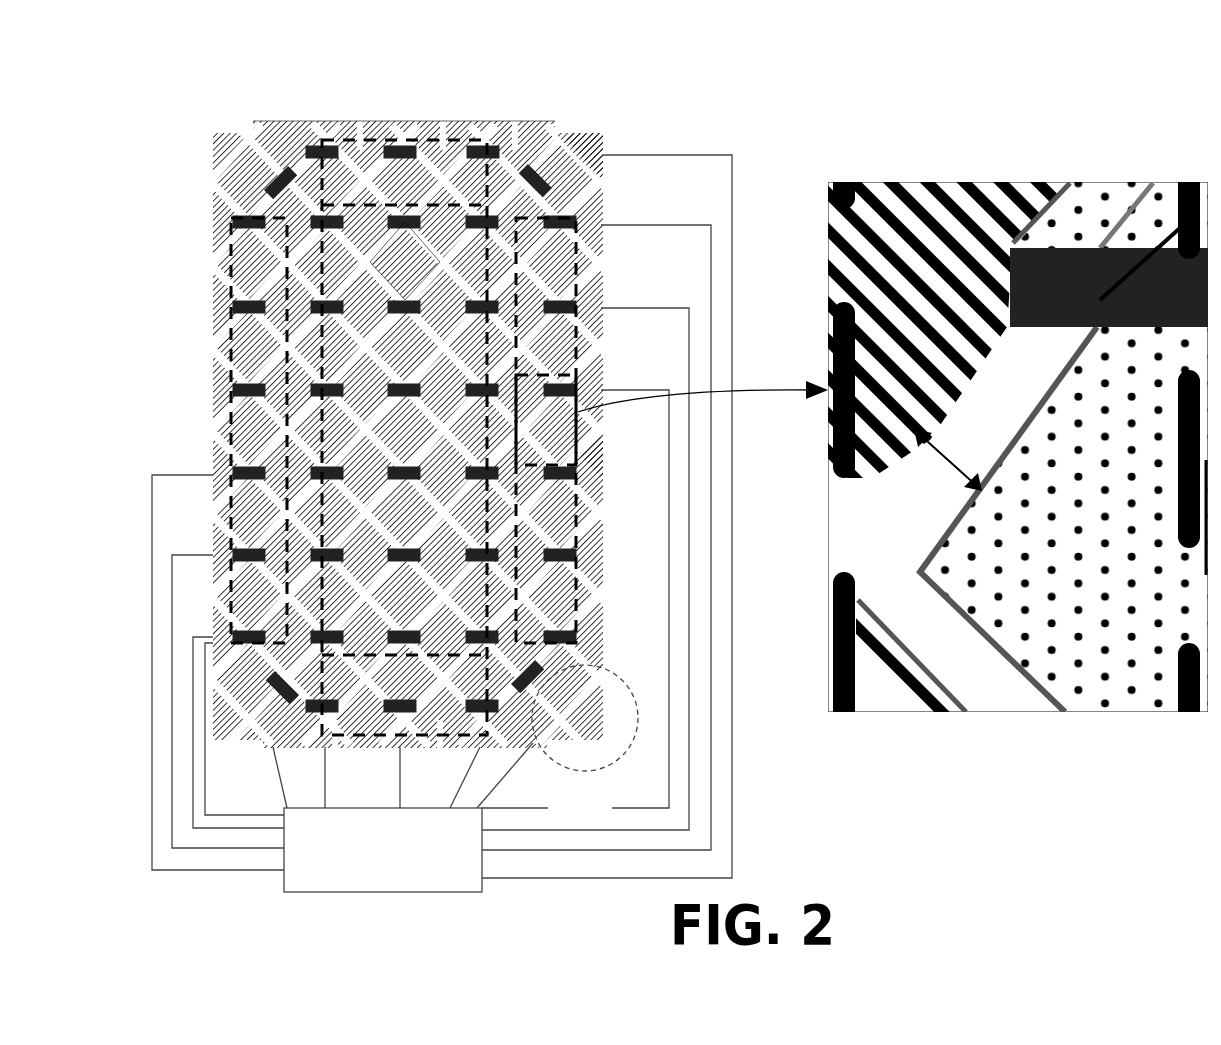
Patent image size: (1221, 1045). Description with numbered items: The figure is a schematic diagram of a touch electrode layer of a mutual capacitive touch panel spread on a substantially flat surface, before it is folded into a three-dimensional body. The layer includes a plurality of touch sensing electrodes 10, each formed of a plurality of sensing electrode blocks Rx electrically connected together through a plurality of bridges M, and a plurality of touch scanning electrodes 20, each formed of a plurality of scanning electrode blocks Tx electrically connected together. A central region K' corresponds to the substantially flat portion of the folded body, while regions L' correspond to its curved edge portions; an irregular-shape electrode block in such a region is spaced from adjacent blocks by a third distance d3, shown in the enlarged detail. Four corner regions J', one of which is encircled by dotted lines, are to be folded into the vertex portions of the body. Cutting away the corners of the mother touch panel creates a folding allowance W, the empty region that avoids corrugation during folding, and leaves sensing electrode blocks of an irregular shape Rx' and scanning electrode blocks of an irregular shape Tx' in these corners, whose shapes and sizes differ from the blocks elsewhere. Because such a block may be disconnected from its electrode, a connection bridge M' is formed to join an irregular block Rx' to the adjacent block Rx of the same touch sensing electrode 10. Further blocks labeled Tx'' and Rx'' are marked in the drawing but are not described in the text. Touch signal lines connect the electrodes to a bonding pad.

The touch sensing electrode 10 is at (597, 461).
The touch scanning electrode 20 is at (400, 112).
The second transmit electrode bridge Tx'' is at (294, 385).
The scanning electrode block of an irregular shape Tx' is at (595, 378).
The sensing electrode block of an irregular shape Rx' is at (544, 125).
The second receive electrode Rx'' is at (628, 455).
The sensing electrode block Rx is at (357, 395).
The scanning electrode block Tx is at (399, 450).
The region corresponding to curved edge portion L' is at (403, 263).
The region corresponding to substantially flat portion K' is at (235, 429).
The bridge M is at (579, 395).
The connection bridge M' is at (562, 749).
The corner region J' is at (592, 690).
The folding allowance W is at (563, 733).
The third distance d3 is at (948, 460).